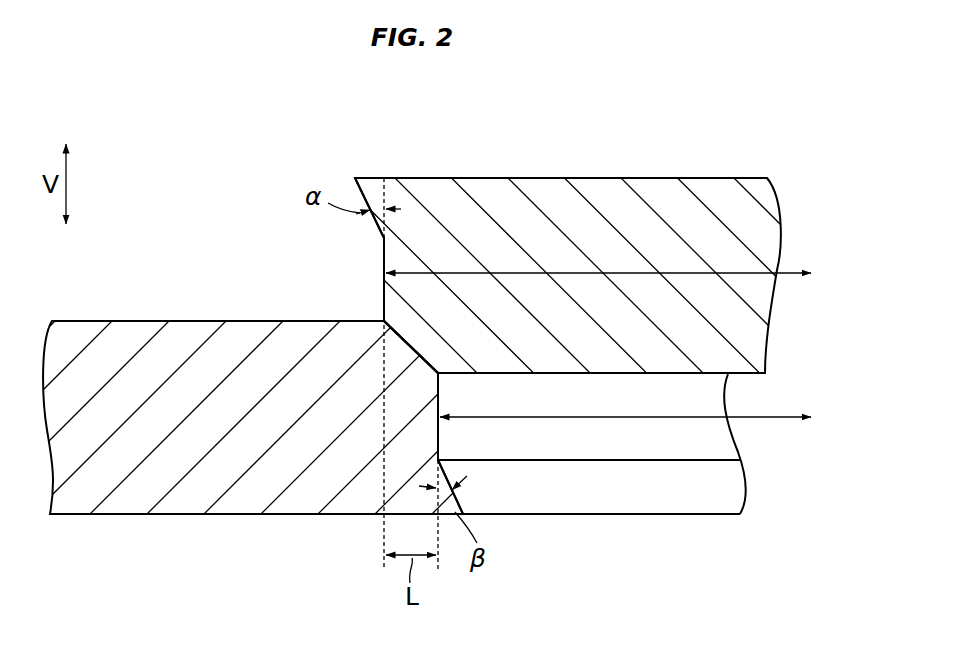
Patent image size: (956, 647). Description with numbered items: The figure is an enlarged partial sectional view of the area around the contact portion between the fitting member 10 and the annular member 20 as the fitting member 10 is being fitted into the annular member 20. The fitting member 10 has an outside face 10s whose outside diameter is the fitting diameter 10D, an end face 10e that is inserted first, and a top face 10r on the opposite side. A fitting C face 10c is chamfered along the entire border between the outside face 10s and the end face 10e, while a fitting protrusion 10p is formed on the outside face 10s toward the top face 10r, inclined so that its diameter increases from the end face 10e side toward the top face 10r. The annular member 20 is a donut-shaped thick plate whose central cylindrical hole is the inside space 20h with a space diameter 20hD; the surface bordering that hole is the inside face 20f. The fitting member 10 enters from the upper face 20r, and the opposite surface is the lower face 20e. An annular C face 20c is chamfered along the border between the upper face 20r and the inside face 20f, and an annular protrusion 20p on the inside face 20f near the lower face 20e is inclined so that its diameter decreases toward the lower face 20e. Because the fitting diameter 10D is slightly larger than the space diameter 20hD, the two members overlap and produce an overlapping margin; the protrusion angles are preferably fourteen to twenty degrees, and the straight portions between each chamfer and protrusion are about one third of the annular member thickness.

The fitting member 10 is at (467, 177).
The fitting protrusion 10p is at (364, 179).
The top face 10r is at (634, 176).
The outside face 10s is at (381, 248).
The fitting C face 10c is at (409, 351).
The end face 10e is at (660, 378).
The fitting diameter 10D is at (783, 270).
The annular member 20 is at (118, 516).
The upper face 20r is at (163, 318).
The annular C face 20c is at (403, 333).
The lower face 20e is at (180, 516).
The inside face 20f is at (441, 440).
The annular protrusion 20p is at (456, 497).
The inside space 20h is at (603, 453).
The space diameter 20hD is at (782, 415).